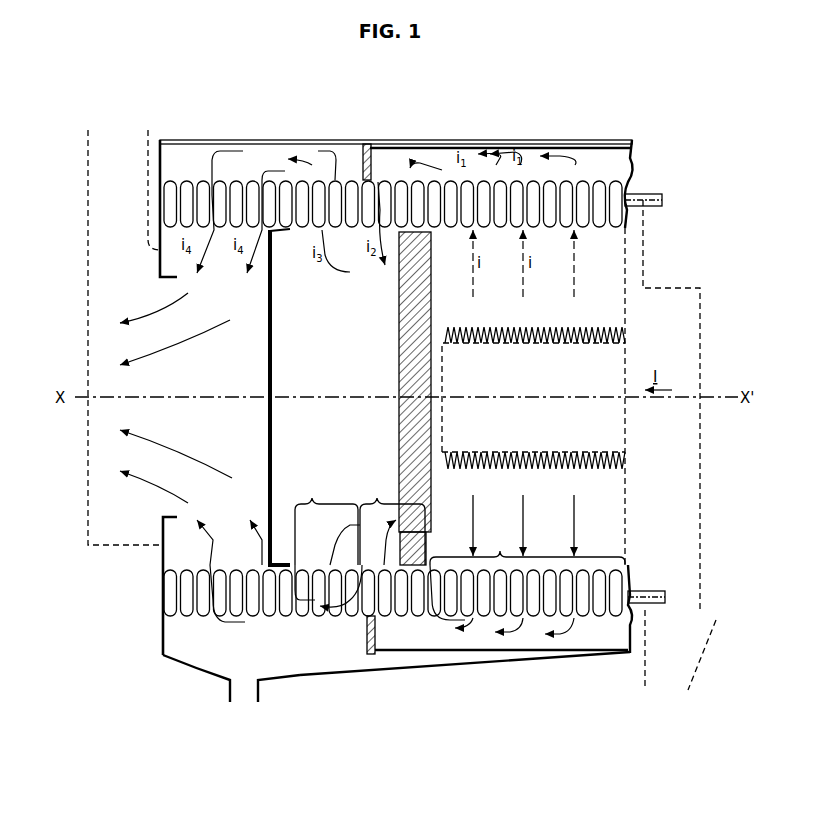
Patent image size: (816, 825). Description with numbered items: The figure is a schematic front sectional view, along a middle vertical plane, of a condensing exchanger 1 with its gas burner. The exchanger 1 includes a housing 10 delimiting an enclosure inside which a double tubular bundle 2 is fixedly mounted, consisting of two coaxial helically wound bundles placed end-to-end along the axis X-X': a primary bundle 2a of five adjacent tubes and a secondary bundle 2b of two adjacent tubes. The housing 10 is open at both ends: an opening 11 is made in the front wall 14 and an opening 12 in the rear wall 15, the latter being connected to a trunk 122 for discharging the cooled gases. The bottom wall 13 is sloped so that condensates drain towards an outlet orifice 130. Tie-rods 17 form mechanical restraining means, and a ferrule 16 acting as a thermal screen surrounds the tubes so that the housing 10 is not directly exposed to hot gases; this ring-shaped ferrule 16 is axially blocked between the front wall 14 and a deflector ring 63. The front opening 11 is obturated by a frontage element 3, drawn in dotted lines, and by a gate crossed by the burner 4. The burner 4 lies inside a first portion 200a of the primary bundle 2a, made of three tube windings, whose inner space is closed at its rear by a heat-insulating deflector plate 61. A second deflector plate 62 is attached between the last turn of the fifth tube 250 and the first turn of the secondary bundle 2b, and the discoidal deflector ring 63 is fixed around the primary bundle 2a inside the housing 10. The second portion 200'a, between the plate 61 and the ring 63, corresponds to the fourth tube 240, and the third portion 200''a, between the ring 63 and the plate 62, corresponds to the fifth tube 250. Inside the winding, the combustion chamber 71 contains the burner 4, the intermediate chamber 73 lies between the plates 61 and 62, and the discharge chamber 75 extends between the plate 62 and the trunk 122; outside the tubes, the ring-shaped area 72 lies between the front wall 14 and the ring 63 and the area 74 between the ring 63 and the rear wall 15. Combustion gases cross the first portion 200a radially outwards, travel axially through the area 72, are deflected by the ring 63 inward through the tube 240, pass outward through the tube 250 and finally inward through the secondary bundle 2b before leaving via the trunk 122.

The exchanger 1 is at (135, 735).
The double tubular bundle 2 is at (596, 530).
The primary bundle 2a is at (624, 170).
The secondary bundle 2b is at (163, 655).
The frontage element 3 is at (678, 288).
The burner 4 is at (540, 328).
The housing 10 is at (432, 670).
The front opening 11 is at (628, 265).
The rear opening 12 is at (165, 292).
The bottom wall 13 is at (315, 678).
The front wall 14 is at (636, 660).
The rear wall 15 is at (162, 590).
The ferrule 16 is at (482, 652).
The tie-rods 17 is at (650, 188).
The deflector plate 61 is at (399, 448).
The second deflector plate 62 is at (268, 436).
The deflector ring 63 is at (362, 154).
The combustion chamber 71 is at (533, 287).
The ring-shaped area 72 is at (610, 184).
The intermediate chamber 73 is at (336, 397).
The ring-shaped area 74 is at (178, 208).
The discharge chamber 75 is at (180, 397).
The trunk 122 is at (88, 228).
The outlet orifice 130 is at (228, 692).
The first portion of the primary exchanger 200a is at (527, 530).
The second portion 200'a is at (392, 521).
The third portion 200''a is at (324, 521).
The fourth tube 240 is at (390, 186).
The fifth tube 250 is at (335, 180).